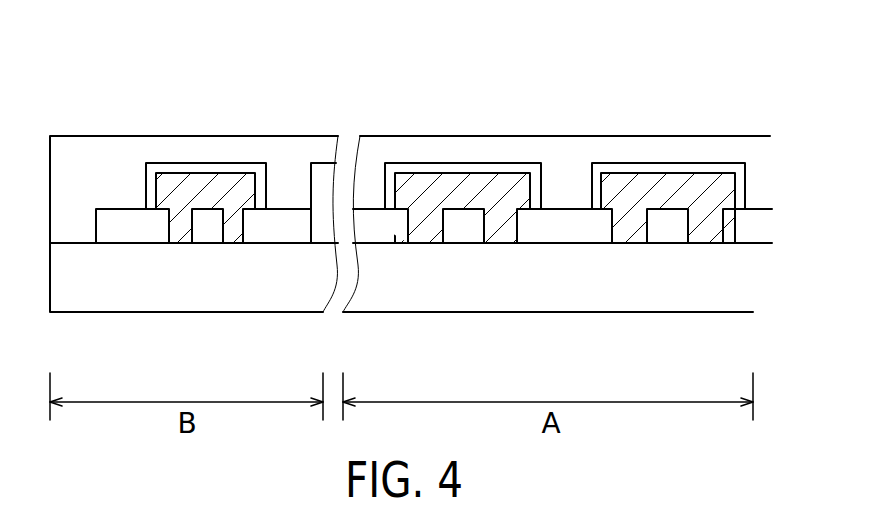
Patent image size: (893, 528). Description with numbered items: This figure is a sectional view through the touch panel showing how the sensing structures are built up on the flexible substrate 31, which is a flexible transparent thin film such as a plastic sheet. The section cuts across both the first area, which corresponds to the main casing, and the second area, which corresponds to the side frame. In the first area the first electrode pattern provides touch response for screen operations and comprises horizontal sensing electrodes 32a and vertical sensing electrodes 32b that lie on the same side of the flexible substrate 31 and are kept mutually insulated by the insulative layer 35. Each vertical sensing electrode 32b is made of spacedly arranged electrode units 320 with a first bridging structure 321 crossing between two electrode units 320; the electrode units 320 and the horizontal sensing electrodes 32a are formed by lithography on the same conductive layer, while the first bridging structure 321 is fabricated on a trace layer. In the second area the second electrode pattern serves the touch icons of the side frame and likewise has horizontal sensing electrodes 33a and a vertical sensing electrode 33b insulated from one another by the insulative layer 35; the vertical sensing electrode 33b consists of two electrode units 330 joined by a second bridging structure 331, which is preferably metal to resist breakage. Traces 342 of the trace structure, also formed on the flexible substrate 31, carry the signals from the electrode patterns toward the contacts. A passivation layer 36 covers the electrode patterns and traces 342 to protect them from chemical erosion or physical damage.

The flexible substrate 31 is at (477, 288).
The insulative layer 35 is at (235, 237).
The passivation layer 36 is at (428, 152).
The horizontal sensing electrodes 32a is at (666, 229).
The vertical sensing electrodes 32b is at (728, 73).
The electrode units 320 is at (568, 218).
The first bridging structure 321 is at (657, 163).
The horizontal sensing electrodes 33a is at (208, 233).
The vertical sensing electrode 33b is at (112, 73).
The electrode units 330 is at (117, 219).
The second bridging structure 331 is at (188, 163).
The traces 342 is at (315, 163).